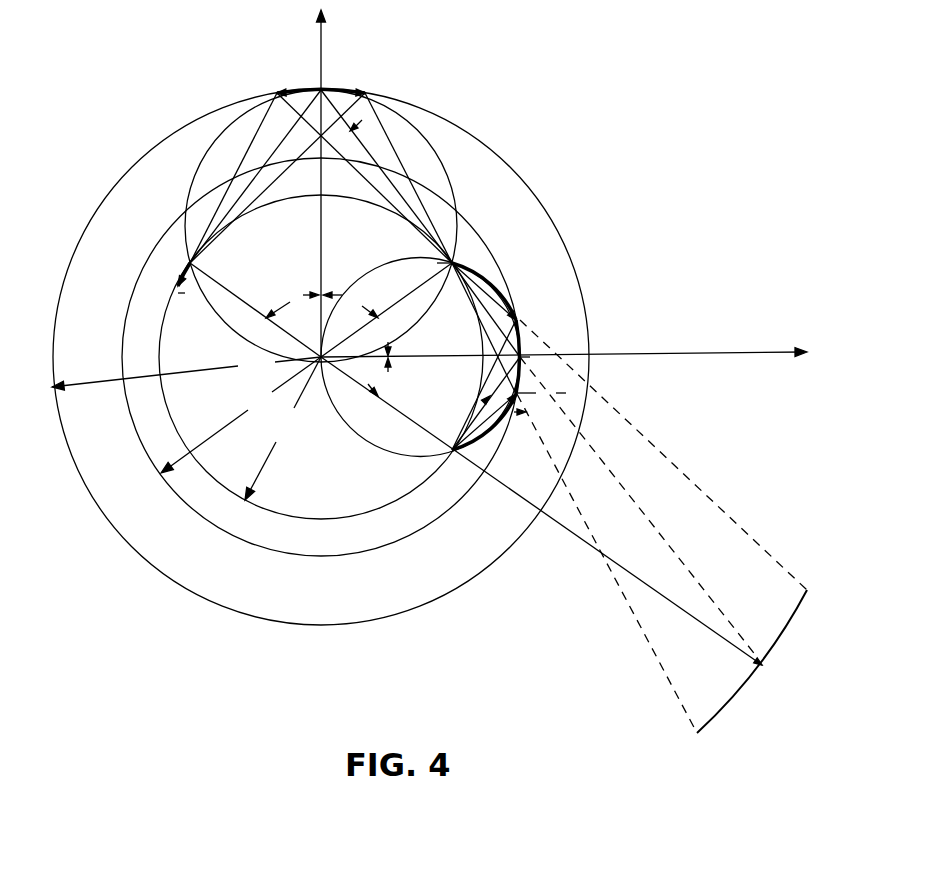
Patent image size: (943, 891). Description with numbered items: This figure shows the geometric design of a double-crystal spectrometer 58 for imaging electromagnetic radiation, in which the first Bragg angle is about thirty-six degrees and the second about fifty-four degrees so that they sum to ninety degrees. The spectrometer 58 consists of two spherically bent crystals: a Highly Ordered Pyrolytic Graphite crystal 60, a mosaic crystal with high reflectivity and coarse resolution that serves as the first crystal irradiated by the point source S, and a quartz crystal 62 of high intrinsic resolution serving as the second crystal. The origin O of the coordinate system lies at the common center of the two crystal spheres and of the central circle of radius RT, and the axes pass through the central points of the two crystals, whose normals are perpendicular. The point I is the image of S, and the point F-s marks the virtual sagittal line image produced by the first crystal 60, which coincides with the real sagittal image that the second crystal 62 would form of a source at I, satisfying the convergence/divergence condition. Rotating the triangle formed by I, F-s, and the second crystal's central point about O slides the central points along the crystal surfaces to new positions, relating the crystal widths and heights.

The double-crystal spectrometer 58 is at (576, 138).
The HOPG crystal 60 is at (533, 324).
The 110-quartz crystal 62 is at (340, 90).